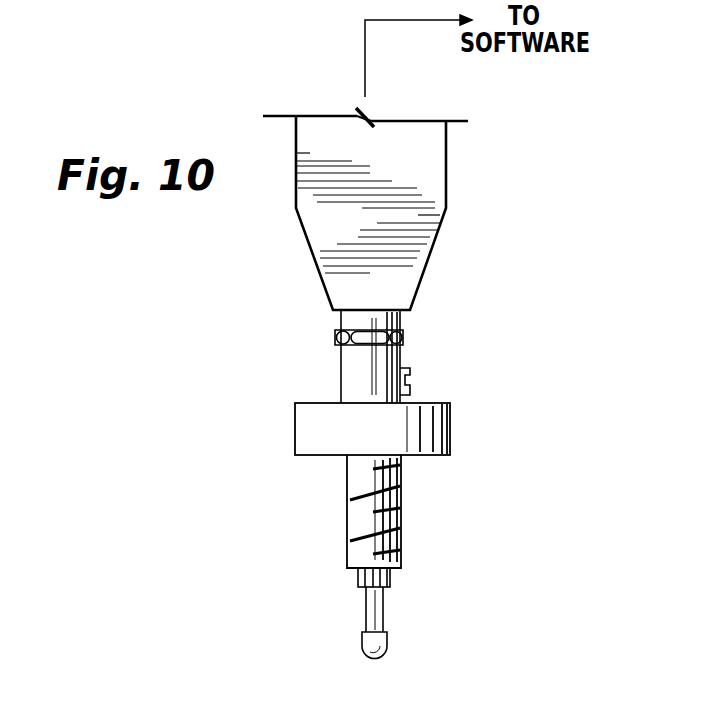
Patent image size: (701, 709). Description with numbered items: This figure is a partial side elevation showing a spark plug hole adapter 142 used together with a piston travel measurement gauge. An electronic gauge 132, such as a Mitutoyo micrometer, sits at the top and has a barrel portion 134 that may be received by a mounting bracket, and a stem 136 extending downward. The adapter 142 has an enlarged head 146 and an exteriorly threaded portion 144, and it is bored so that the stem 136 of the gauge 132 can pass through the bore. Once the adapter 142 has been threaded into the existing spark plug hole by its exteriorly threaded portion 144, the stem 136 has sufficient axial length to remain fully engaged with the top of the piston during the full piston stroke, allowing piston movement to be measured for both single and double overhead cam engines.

The electronic gauge 132 is at (457, 180).
The enlarged head 146 is at (435, 427).
The spark plug hole adapter 142 is at (413, 511).
The exteriorly threaded portion 144 is at (357, 548).
The barrel portion 134 is at (398, 583).
The stem 136 is at (378, 638).